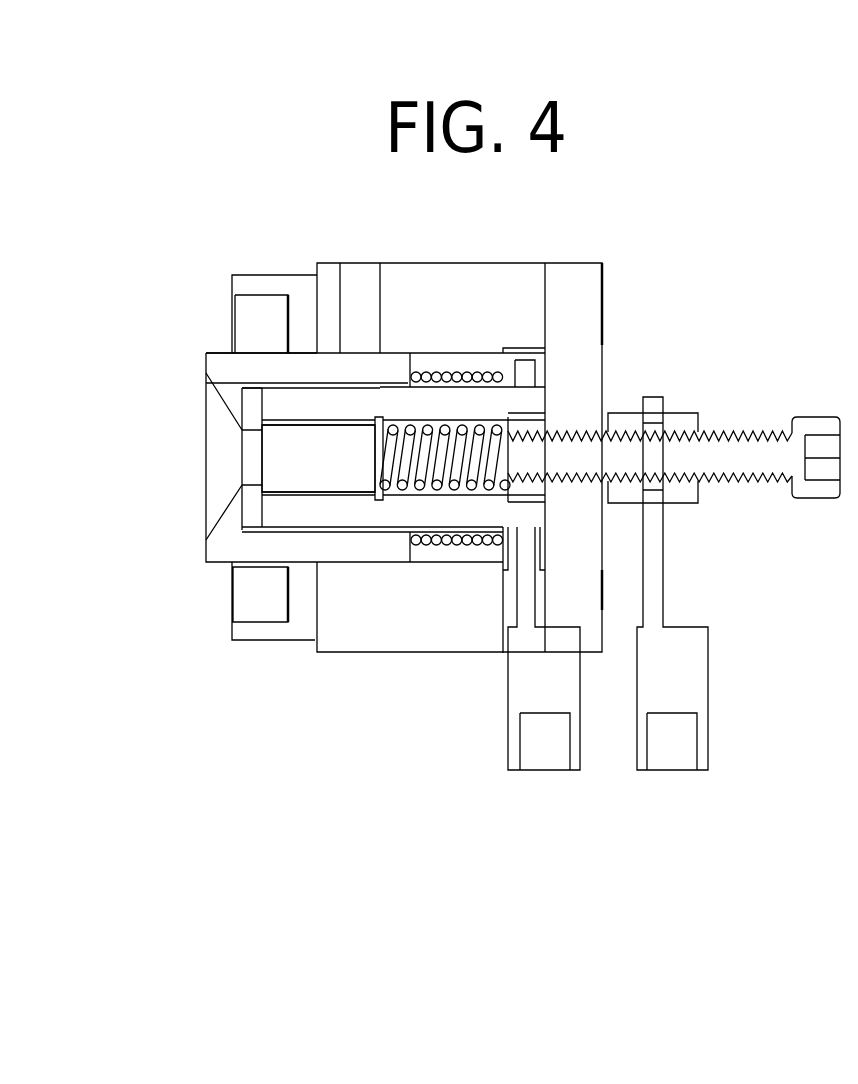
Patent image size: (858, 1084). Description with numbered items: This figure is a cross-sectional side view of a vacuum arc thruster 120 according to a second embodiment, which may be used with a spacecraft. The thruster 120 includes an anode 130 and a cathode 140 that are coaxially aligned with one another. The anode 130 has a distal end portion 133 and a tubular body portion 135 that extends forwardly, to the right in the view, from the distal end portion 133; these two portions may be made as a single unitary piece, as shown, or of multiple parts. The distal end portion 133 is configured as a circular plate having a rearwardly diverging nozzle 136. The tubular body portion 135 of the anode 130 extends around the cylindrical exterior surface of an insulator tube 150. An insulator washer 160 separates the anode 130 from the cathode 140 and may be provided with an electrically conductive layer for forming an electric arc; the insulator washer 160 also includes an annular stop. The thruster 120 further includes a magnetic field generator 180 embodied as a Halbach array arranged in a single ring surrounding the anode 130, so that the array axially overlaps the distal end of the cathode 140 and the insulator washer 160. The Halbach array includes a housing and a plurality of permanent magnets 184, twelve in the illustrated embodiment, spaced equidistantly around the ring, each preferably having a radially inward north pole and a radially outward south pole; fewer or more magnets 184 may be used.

The vacuum arc thruster 120 is at (648, 300).
The anode 130 is at (190, 363).
The distal end portion 133 is at (222, 370).
The tubular body portion 135 is at (353, 548).
The rearwardly diverging nozzle 136 is at (220, 453).
The cathode 140 is at (337, 472).
The insulator tube 150 is at (423, 403).
The insulator washer 160 is at (250, 530).
The magnetic field generator 180 is at (278, 265).
The permanent magnets 184 is at (247, 603).